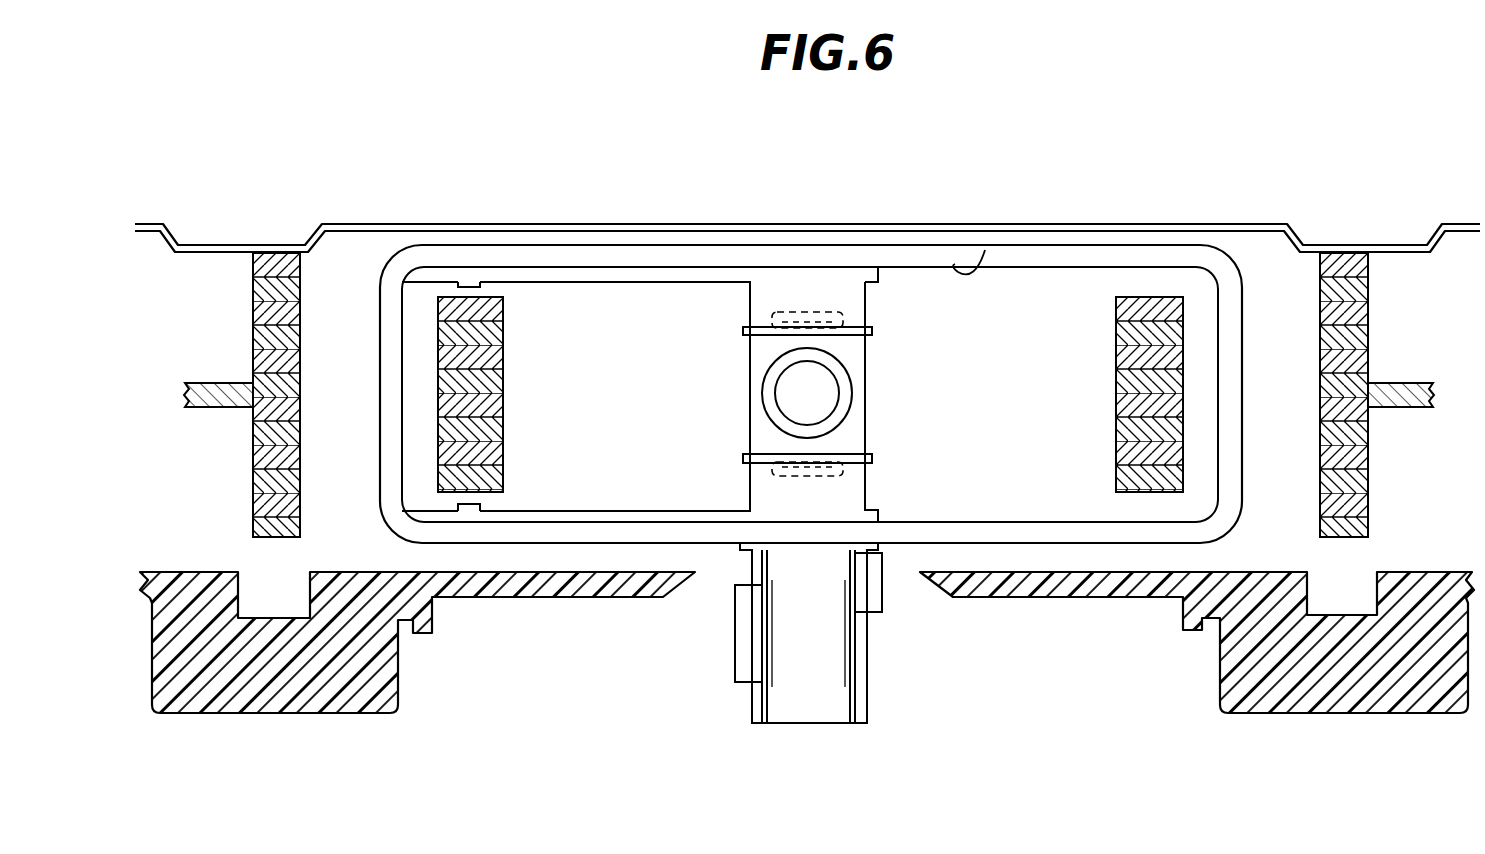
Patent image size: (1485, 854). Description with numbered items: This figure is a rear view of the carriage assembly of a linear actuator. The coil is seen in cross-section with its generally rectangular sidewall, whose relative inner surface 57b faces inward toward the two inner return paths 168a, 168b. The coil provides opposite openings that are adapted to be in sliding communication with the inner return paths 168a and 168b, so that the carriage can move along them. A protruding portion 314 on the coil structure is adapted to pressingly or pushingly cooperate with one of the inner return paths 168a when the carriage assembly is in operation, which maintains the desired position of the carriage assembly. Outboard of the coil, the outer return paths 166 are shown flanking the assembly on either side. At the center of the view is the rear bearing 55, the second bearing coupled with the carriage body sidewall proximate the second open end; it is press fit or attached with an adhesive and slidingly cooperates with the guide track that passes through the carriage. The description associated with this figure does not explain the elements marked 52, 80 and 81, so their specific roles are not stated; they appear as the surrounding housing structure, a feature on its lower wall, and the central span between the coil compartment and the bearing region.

The core 52 is at (681, 290).
The rear bearing 55 is at (846, 376).
The inner surface 57b is at (985, 250).
The housing 80 is at (470, 278).
The bottom projection 81 is at (470, 513).
The outer return paths 166 is at (303, 358).
The inner return path 168a is at (507, 407).
The inner return path 168b is at (1110, 407).
The protruding portion 314 is at (452, 284).